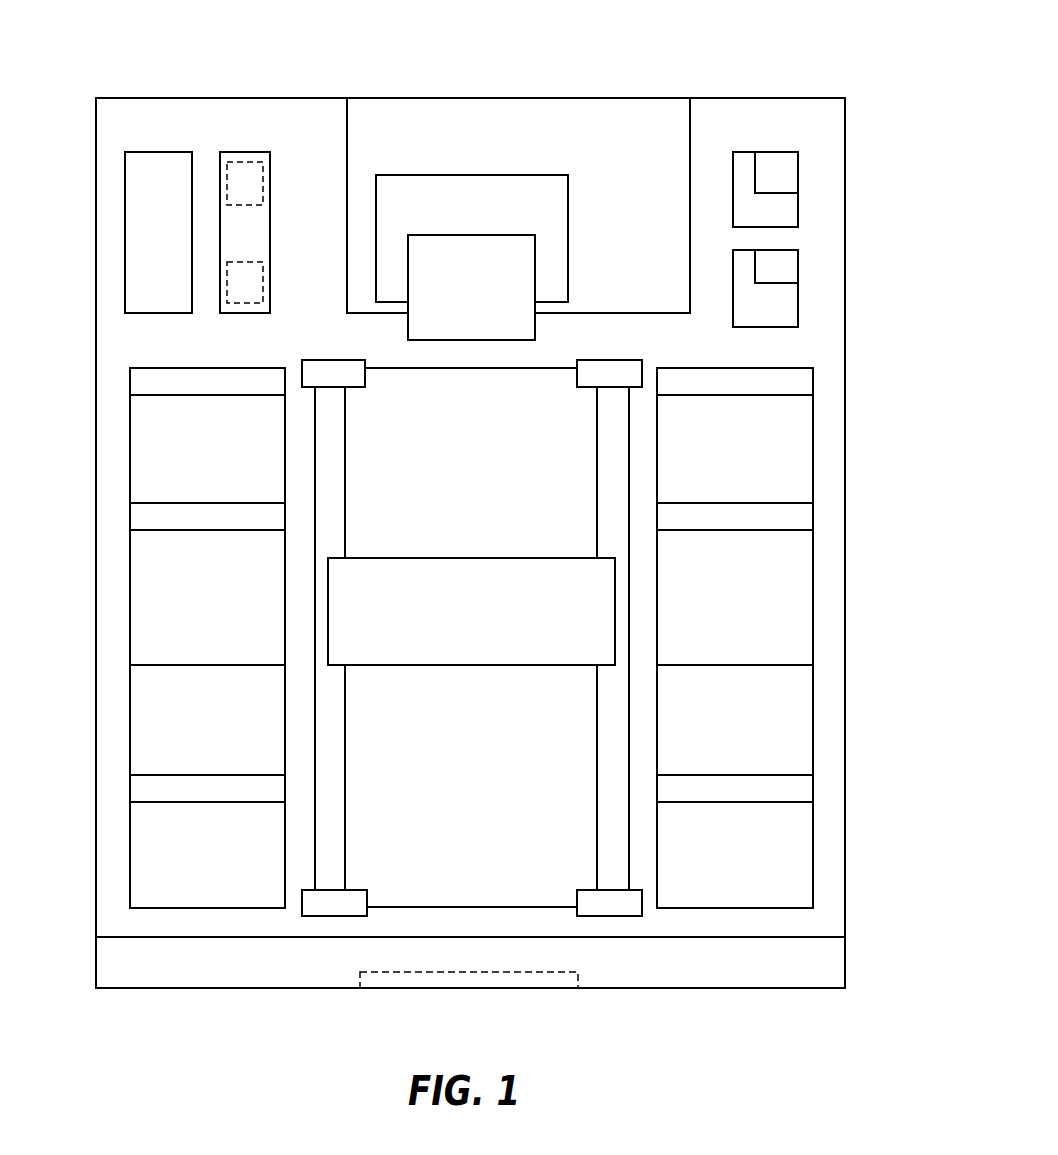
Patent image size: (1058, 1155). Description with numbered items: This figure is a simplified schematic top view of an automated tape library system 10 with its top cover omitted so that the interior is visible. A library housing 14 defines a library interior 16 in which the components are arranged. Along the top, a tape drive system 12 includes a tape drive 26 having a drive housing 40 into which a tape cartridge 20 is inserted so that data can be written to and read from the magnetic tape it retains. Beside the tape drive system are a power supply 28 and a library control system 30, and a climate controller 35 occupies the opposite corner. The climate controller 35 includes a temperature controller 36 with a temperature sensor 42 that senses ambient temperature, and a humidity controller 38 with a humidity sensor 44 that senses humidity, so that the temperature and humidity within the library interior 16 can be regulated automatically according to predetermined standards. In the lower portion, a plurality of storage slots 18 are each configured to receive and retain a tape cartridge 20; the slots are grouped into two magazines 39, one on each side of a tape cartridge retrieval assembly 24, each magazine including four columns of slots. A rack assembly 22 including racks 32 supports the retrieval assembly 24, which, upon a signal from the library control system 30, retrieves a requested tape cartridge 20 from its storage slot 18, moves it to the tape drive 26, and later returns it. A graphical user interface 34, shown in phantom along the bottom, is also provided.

The automated tape library system 10 is at (501, 523).
The tape drive system 12 is at (356, 95).
The library housing 14 is at (845, 462).
The library interior 16 is at (826, 116).
The storage slots 18 is at (148, 858).
The tape cartridge 20 is at (471, 287).
The rack assembly 22 is at (318, 920).
The tape cartridge retrieval assembly 24 is at (348, 612).
The tape drive 26 is at (436, 172).
The power supply 28 is at (125, 195).
The library control system 30 is at (238, 148).
The rack 32 is at (623, 916).
The graphical user interface 34 is at (380, 975).
The climate controller 35 is at (848, 239).
The temperature controller 36 is at (782, 213).
The humidity controller 38 is at (782, 301).
The magazine 39 is at (790, 912).
The drive housing 40 is at (532, 175).
The temperature sensor 42 is at (782, 173).
The humidity sensor 44 is at (826, 266).